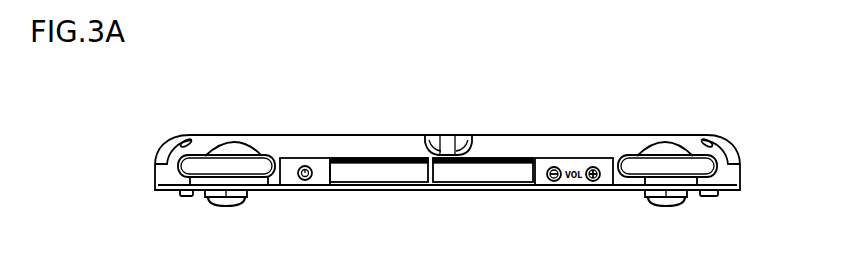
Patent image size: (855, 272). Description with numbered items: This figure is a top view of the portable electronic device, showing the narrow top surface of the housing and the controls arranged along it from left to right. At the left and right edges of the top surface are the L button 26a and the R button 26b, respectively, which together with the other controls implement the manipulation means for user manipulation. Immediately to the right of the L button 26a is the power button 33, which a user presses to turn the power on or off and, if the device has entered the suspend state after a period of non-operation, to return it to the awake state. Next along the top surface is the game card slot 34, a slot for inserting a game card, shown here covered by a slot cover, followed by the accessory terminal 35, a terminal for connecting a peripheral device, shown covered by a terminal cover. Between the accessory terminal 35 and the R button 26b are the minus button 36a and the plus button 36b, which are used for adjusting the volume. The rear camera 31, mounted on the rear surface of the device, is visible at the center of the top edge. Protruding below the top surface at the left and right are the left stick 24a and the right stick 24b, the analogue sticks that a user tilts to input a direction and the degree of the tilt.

The left stick 24a is at (228, 206).
The right stick 24b is at (667, 208).
The L button 26a is at (238, 165).
The R button 26b is at (678, 167).
The rear camera 31 is at (448, 148).
The power button 33 is at (305, 182).
The game card slot 34 is at (380, 172).
The accessory terminal 35 is at (485, 172).
The minus button 36a is at (553, 182).
The plus button 36b is at (595, 163).